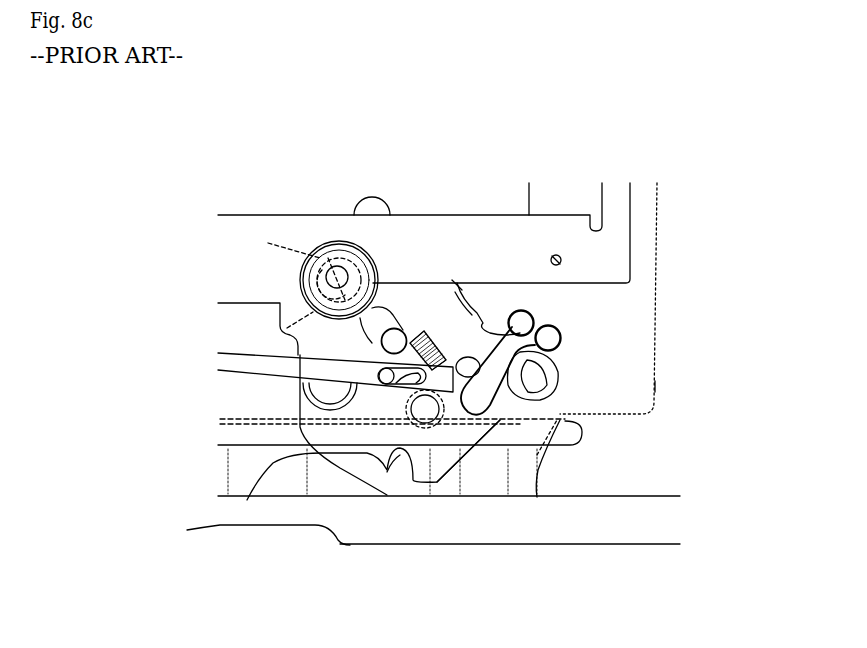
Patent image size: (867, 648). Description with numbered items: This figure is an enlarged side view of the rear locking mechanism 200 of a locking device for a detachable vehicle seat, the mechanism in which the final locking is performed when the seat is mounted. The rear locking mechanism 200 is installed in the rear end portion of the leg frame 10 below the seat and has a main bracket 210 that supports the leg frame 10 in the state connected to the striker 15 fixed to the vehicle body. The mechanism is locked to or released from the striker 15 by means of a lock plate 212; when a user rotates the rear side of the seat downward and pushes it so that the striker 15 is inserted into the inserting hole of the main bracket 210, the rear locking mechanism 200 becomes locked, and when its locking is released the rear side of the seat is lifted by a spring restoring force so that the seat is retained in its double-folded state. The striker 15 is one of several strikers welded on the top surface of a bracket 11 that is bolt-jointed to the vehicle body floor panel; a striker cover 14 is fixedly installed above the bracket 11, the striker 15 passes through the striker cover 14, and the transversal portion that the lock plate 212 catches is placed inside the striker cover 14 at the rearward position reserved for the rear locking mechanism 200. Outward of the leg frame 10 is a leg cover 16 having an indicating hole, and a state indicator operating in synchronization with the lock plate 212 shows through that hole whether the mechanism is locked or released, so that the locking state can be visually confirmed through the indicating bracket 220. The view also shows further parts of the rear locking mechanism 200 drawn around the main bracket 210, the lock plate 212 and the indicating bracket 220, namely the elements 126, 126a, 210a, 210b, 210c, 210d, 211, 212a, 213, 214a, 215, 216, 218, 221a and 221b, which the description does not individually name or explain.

The leg frame 10 is at (554, 231).
The bracket 11 is at (258, 518).
The striker cover 14 is at (537, 455).
The striker 15 is at (397, 490).
The leg cover 16 is at (655, 386).
The slide bar 126 is at (233, 366).
The arc recess 126a is at (388, 405).
The rear locking mechanism 200 is at (559, 376).
The main bracket 210 is at (200, 528).
The roller 210a is at (333, 280).
The roller 210b is at (394, 328).
The cam arm 210c is at (480, 347).
The cam portion 210d is at (347, 470).
The link 211 is at (380, 355).
The lock plate 212 is at (468, 437).
The roller 212a is at (424, 412).
The spring 213 is at (493, 372).
The arm 214a is at (382, 332).
The stopper 215 is at (402, 345).
The guide 216 is at (297, 248).
The plate 218 is at (463, 347).
The indicating bracket 220 is at (545, 355).
The roller 221a is at (525, 320).
The roller 221b is at (551, 337).